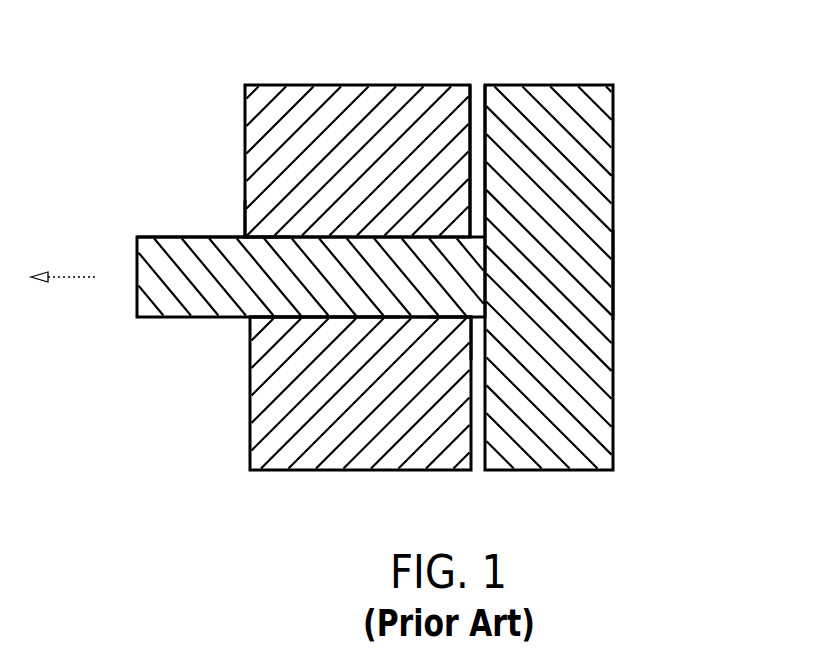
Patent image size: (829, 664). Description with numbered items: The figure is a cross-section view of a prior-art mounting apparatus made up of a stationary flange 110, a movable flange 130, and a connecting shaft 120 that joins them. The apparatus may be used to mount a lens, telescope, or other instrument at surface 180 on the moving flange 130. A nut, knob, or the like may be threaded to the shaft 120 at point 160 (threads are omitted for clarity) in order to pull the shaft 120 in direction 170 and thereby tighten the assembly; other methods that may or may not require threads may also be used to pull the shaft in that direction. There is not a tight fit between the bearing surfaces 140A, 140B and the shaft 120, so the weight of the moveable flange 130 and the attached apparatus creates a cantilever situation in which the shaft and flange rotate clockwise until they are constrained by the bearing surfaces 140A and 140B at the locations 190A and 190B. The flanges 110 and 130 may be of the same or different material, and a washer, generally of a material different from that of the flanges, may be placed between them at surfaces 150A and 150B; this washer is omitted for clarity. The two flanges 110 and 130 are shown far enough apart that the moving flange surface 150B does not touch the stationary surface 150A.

The stationary flange 110 is at (250, 436).
The connecting shaft 120 is at (152, 320).
The movable flange 130 is at (604, 406).
The bearing surface 140A is at (278, 319).
The bearing surface 140B is at (338, 236).
The stationary surface 150A is at (468, 84).
The moving flange surface 150B is at (484, 84).
The point 160 is at (168, 236).
The direction 170 is at (80, 276).
The surface 180 is at (614, 273).
The constraint location 190A is at (470, 320).
The constraint location 190B is at (248, 236).